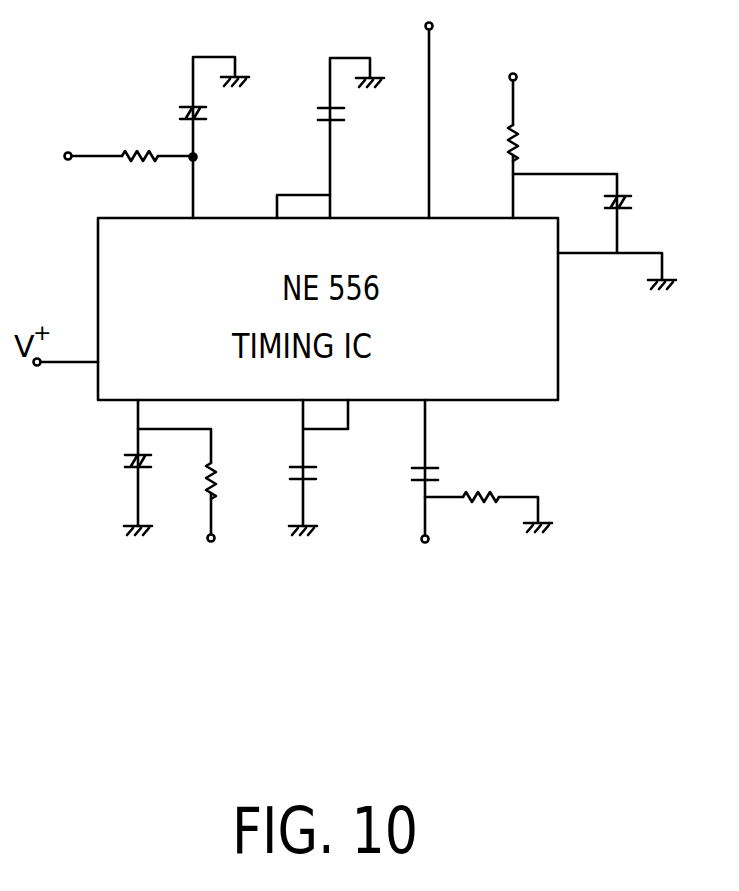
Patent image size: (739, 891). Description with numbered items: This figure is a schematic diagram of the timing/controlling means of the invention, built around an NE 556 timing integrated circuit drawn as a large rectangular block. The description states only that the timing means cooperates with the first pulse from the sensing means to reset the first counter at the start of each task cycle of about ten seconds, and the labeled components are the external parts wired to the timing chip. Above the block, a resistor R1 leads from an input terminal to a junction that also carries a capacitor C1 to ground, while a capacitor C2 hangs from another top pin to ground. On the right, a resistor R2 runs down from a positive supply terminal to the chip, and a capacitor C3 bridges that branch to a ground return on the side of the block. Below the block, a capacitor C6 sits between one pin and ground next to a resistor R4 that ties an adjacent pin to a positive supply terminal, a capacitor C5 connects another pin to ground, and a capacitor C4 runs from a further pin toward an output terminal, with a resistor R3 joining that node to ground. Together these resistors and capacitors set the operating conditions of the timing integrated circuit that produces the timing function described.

The resistor R1 is at (131, 141).
The capacitor C1 is at (214, 137).
The capacitor C2 is at (351, 138).
The resistor R2 is at (530, 126).
The capacitor C3 is at (594, 231).
The capacitor C6 is at (153, 467).
The resistor R4 is at (197, 494).
The capacitor C5 is at (319, 467).
The capacitor C4 is at (442, 471).
The resistor R3 is at (488, 515).